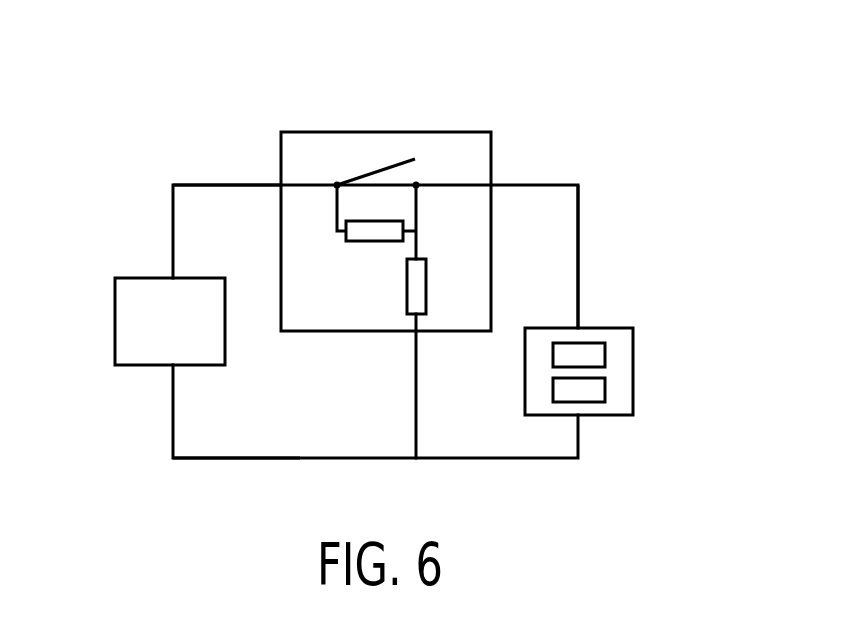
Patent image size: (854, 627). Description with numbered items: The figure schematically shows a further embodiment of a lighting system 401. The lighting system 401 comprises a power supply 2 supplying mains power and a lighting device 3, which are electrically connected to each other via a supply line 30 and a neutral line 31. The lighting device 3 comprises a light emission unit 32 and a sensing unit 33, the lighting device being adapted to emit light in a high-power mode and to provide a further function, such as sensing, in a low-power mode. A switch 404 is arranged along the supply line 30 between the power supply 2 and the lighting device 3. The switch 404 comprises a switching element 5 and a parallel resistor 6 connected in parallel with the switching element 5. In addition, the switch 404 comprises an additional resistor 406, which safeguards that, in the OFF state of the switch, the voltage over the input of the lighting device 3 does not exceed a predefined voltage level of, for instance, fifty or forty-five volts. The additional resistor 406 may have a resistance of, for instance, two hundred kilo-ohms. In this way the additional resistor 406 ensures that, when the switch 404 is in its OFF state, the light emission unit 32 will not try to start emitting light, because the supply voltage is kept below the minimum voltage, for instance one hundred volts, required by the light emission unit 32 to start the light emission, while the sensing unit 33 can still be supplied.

The lighting system 401 is at (622, 94).
The switch 404 is at (433, 132).
The additional resistor 406 is at (430, 281).
The switching element 5 is at (368, 150).
The parallel resistor 6 is at (368, 243).
The supply line 30 is at (160, 172).
The neutral line 31 is at (160, 470).
The power supply 2 is at (128, 366).
The lighting device 3 is at (633, 368).
The light emission unit 32 is at (605, 347).
The sensing unit 33 is at (605, 390).